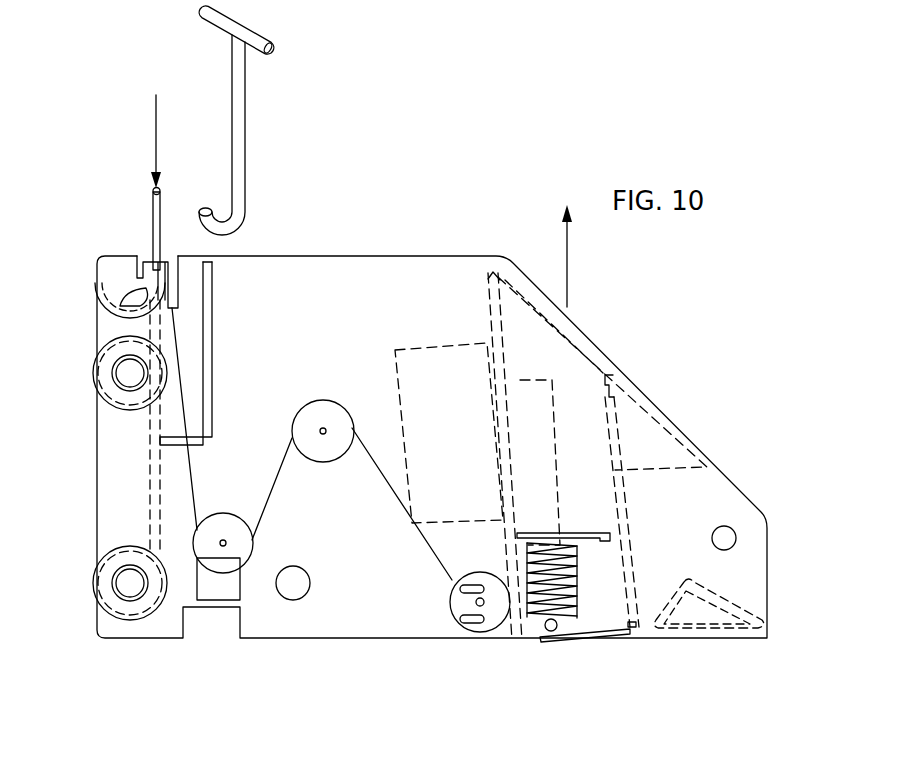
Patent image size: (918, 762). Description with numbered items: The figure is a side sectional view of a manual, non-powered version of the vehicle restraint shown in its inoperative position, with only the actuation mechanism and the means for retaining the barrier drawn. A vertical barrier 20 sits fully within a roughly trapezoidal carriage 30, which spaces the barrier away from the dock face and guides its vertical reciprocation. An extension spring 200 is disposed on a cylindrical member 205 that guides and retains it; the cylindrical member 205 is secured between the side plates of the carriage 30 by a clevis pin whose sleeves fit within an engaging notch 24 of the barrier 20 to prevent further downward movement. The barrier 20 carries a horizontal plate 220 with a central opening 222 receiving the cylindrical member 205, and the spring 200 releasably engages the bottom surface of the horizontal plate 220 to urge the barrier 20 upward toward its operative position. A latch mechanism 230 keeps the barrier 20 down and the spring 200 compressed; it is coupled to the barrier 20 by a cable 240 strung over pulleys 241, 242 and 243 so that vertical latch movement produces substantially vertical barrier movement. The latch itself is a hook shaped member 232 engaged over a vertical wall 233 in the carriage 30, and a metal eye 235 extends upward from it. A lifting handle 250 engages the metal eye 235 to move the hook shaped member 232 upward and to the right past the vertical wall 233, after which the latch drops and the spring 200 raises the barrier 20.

The barrier 20 is at (565, 365).
The engaging notch 24 is at (552, 633).
The carriage 30 is at (297, 630).
The extension spring 200 is at (578, 604).
The cylindrical member 205 is at (550, 430).
The horizontal plate 220 is at (610, 533).
The central opening 222 is at (567, 538).
The latch mechanism 230 is at (190, 279).
The hook shaped member 232 is at (172, 260).
The vertical wall 233 is at (144, 272).
The metal eye 235 is at (153, 192).
The cable 240 is at (187, 487).
The pulley 241 is at (200, 530).
The pulley 242 is at (319, 405).
The pulley 243 is at (487, 632).
The lifting handle 250 is at (242, 115).